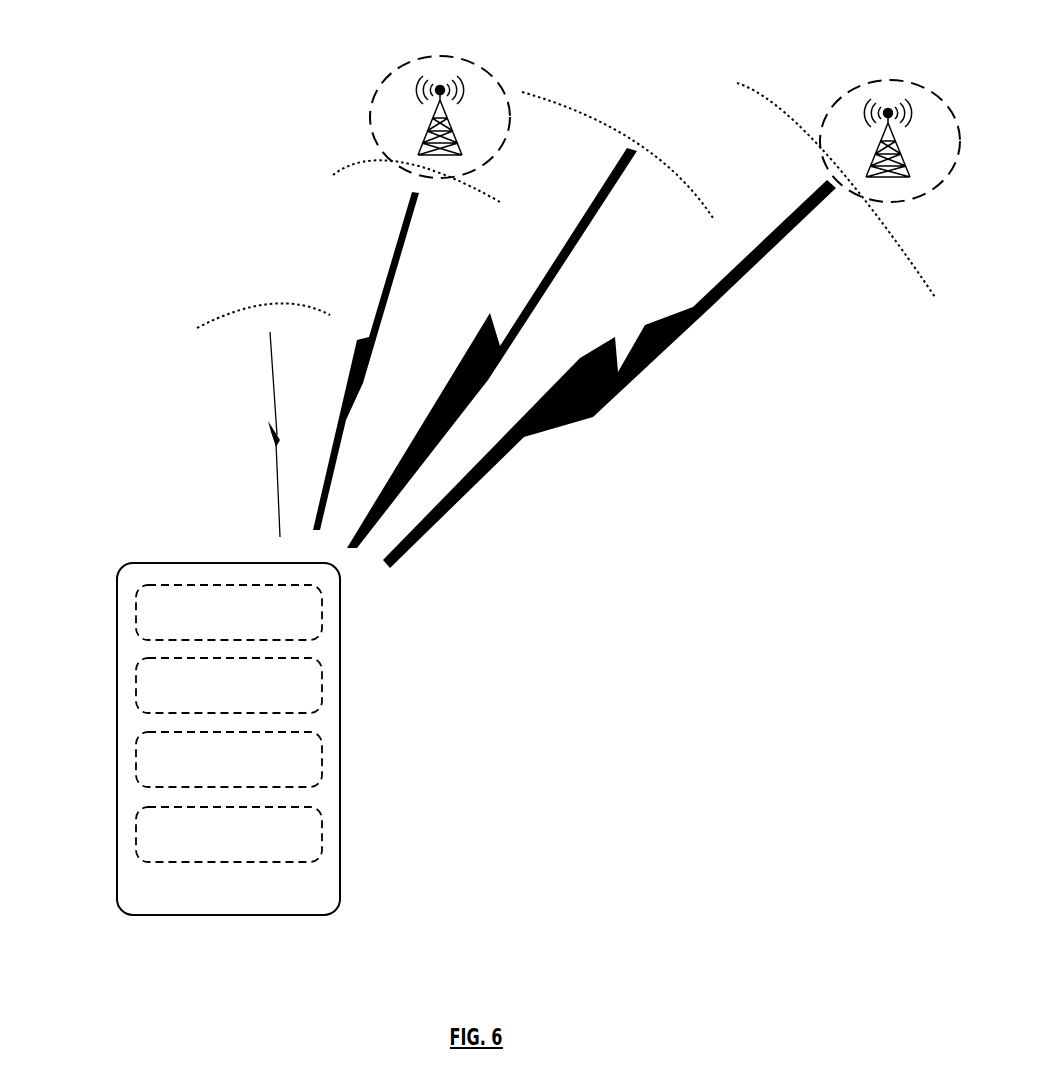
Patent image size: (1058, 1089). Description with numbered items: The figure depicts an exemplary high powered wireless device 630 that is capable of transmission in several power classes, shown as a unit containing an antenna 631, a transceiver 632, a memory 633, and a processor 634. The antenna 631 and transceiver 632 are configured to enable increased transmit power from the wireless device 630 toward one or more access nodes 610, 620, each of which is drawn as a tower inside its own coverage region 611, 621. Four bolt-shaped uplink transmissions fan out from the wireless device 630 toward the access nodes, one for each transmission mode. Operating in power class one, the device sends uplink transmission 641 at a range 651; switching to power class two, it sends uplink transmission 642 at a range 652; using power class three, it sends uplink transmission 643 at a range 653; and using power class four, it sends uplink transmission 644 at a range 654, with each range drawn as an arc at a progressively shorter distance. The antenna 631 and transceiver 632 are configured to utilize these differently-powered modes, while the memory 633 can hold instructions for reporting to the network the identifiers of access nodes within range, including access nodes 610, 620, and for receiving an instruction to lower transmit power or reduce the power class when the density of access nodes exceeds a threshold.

The access node 610 is at (427, 138).
The first cell coverage area 611 is at (443, 53).
The access node 620 is at (878, 140).
The second cell coverage area 621 is at (882, 80).
The wireless device 630 is at (191, 721).
The antenna 631 is at (137, 612).
The transceiver 632 is at (137, 684).
The memory 633 is at (137, 759).
The processor 634 is at (137, 833).
The uplink transmission 641 is at (710, 290).
The uplink transmission 642 is at (543, 285).
The uplink transmission 643 is at (397, 260).
The uplink transmission 644 is at (272, 435).
The range 651 is at (737, 83).
The range 652 is at (597, 202).
The range 653 is at (355, 167).
The range 654 is at (220, 313).